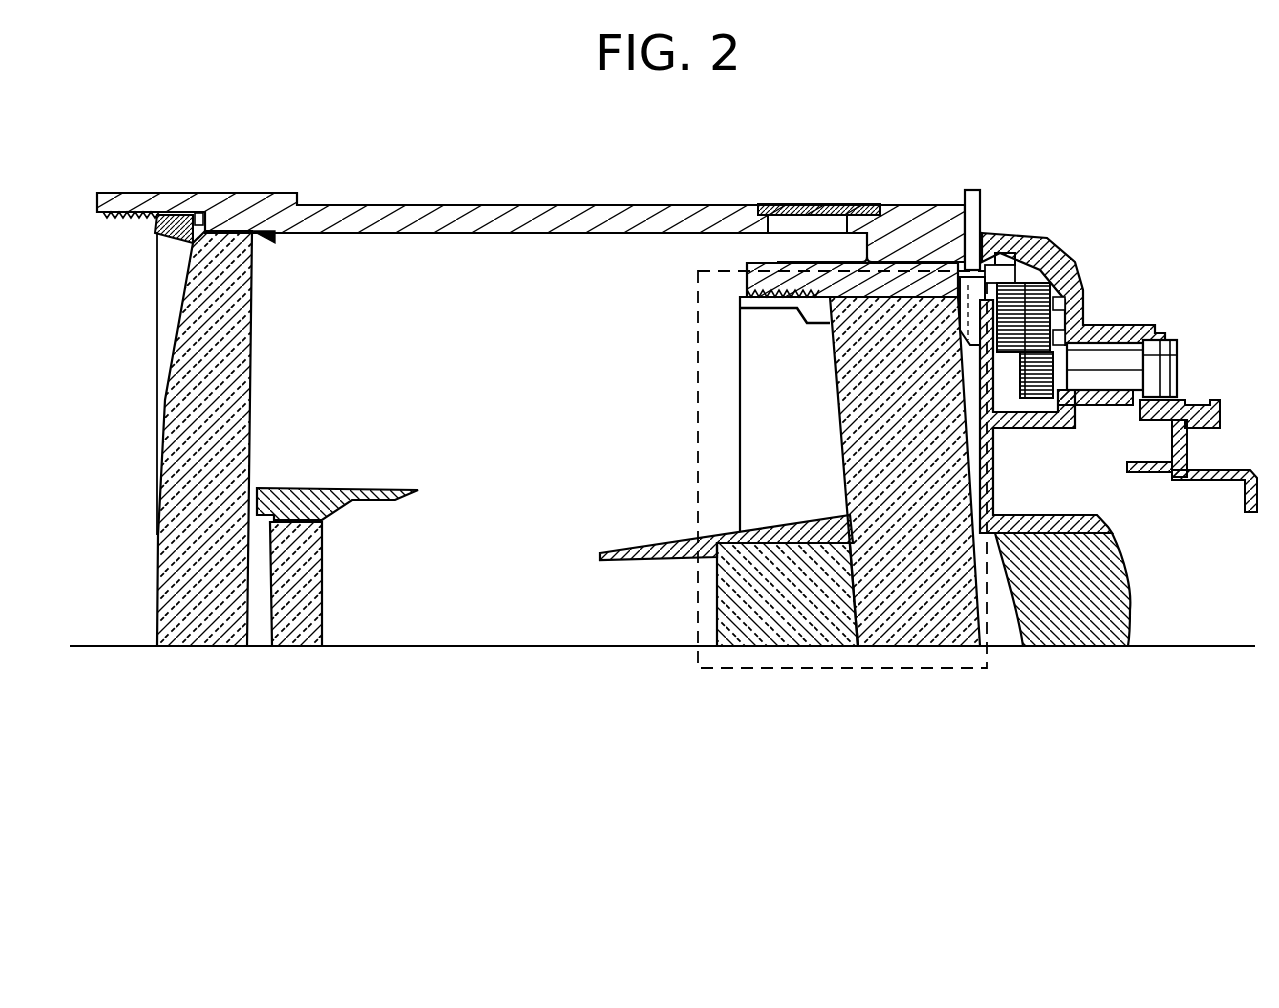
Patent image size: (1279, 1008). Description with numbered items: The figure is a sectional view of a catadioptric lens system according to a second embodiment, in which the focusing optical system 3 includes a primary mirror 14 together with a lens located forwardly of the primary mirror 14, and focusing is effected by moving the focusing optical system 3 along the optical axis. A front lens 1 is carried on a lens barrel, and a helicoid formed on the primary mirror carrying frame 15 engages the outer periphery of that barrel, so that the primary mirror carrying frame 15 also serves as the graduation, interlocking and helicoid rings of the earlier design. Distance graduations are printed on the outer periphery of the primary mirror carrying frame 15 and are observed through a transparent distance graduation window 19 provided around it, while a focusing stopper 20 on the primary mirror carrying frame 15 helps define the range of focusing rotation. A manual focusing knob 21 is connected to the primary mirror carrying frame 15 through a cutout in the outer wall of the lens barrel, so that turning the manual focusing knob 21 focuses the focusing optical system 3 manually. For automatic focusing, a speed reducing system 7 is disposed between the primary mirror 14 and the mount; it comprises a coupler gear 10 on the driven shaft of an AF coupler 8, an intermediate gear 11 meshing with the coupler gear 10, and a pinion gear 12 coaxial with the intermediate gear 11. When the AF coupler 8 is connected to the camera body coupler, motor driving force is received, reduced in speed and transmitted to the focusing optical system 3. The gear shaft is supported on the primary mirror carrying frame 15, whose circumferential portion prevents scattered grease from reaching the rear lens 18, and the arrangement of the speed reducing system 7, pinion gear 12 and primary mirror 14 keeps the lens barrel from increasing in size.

The front lens 1 is at (228, 253).
The focusing optical system 3 is at (868, 669).
The speed reducing system 7 is at (1060, 268).
The AF coupler 8 is at (1177, 366).
The coupler gear 10 is at (1085, 363).
The intermediate gear 11 is at (1060, 330).
The pinion gear 12 is at (1065, 277).
The primary mirror 14 is at (986, 617).
The primary mirror carrying frame 15 is at (800, 264).
The rear lens 18 is at (1100, 592).
The distance graduation window 19 is at (866, 206).
The focusing stopper 20 is at (1002, 262).
The manual focusing knob 21 is at (982, 203).